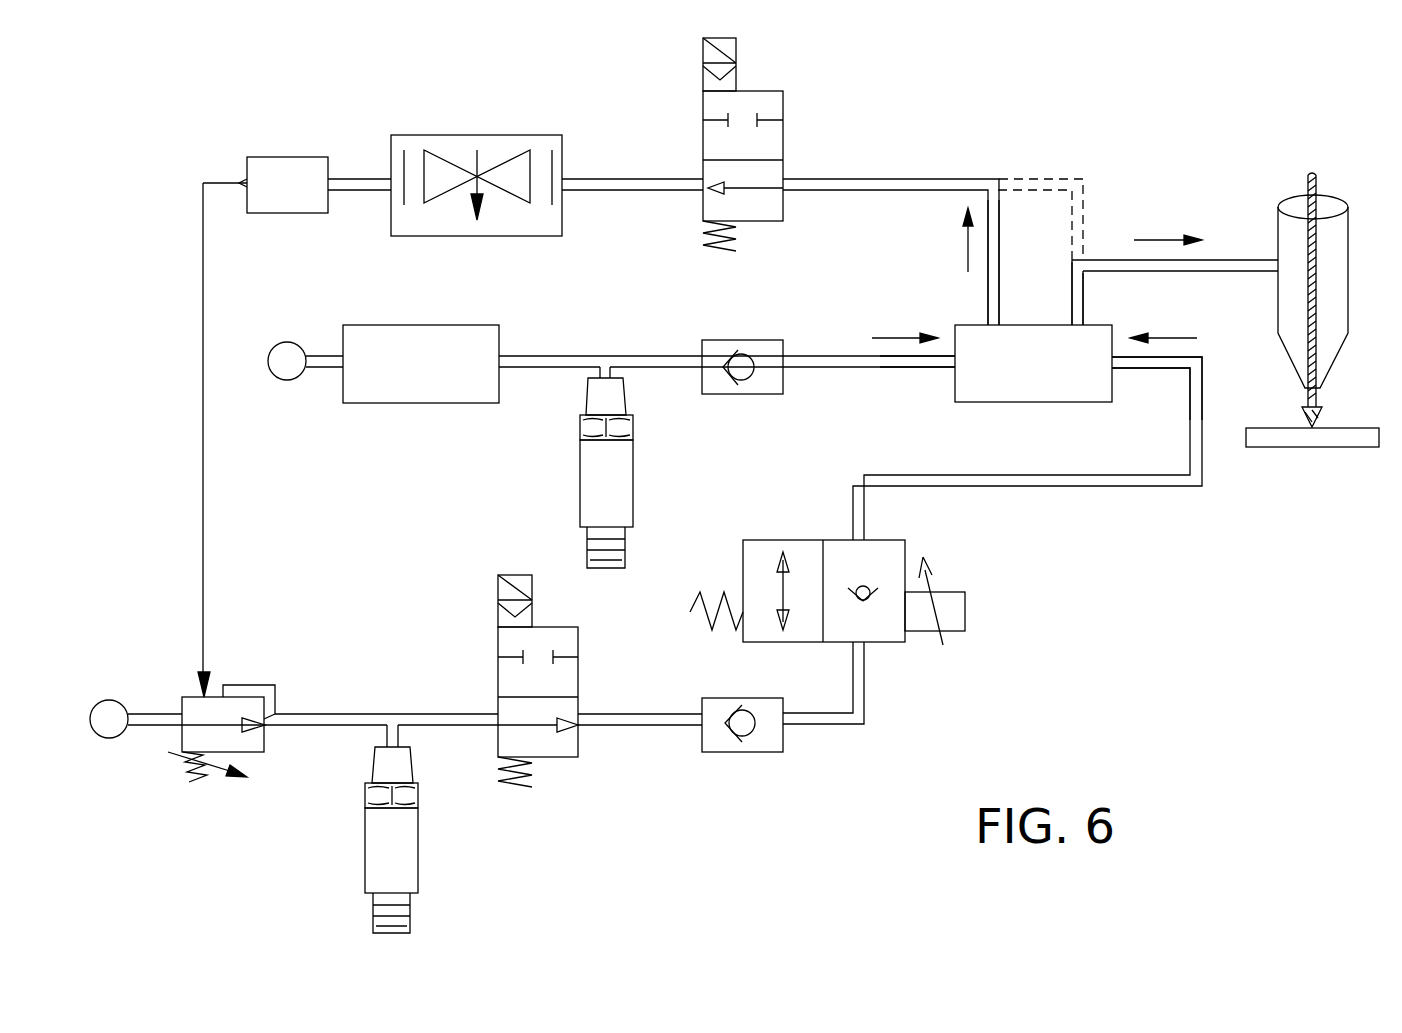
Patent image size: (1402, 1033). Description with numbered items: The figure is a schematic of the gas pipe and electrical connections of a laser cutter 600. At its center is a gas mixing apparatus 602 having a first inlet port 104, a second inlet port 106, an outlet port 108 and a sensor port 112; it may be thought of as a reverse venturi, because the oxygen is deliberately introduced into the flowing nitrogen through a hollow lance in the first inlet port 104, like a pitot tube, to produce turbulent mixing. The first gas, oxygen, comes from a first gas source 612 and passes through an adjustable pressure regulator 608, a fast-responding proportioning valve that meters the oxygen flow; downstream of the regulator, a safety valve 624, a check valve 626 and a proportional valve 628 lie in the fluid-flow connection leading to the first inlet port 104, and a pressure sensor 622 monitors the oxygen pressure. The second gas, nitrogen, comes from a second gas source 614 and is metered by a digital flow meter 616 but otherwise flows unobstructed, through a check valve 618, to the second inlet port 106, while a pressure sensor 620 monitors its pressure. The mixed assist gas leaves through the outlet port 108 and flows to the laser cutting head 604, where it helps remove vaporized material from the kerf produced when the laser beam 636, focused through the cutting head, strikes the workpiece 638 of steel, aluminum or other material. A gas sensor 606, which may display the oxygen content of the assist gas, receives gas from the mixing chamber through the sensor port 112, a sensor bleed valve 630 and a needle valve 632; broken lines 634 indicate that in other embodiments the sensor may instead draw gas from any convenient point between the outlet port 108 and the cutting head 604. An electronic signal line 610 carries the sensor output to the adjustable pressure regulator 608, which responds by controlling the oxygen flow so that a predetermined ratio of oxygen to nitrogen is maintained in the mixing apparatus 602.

The laser cutter 600 is at (920, 112).
The gas mixing apparatus 602 is at (987, 405).
The laser cutting head 604 is at (1275, 235).
The gas sensor 606 is at (268, 157).
The adjustable pressure regulator 608 is at (263, 743).
The electronic signal line 610 is at (203, 427).
The first gas source 612 is at (108, 697).
The second gas source 614 is at (272, 378).
The digital flow meter 616 is at (403, 325).
The check valve 618 is at (733, 395).
The pressure sensor 620 is at (633, 452).
The pressure sensor 622 is at (420, 827).
The safety valve 624 is at (495, 677).
The check valve 626 is at (720, 752).
The proportional valve 628 is at (882, 643).
The sensor bleed valve 630 is at (758, 222).
The needle valve 632 is at (505, 135).
The broken lines 634 is at (1085, 200).
The laser beam 636 is at (1318, 185).
The workpiece 638 is at (1290, 450).
The first inlet port 104 is at (1113, 367).
The second inlet port 106 is at (953, 368).
The outlet port 108 is at (1085, 323).
The sensor port 112 is at (985, 320).